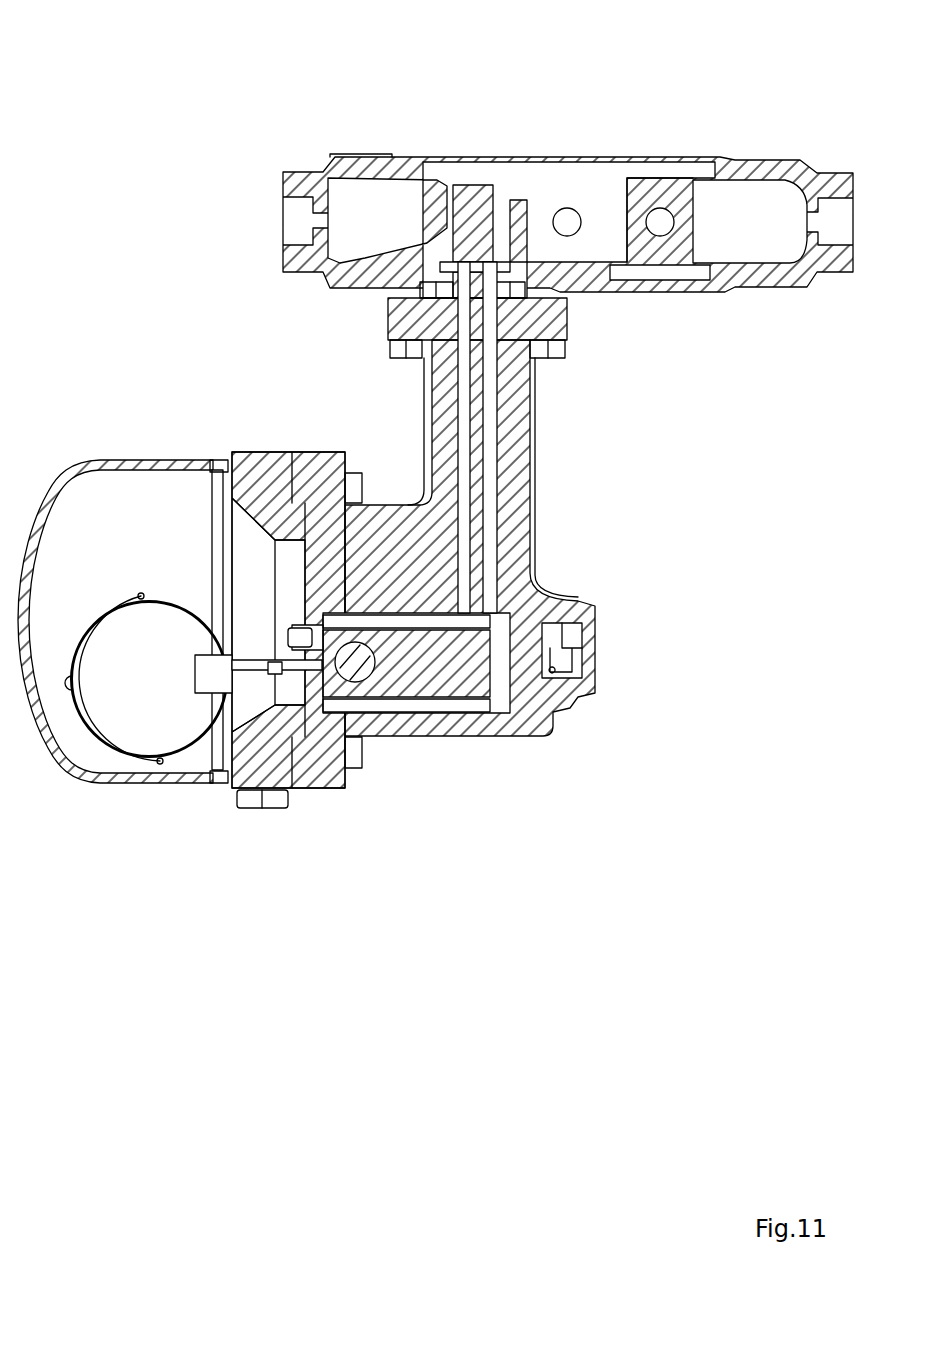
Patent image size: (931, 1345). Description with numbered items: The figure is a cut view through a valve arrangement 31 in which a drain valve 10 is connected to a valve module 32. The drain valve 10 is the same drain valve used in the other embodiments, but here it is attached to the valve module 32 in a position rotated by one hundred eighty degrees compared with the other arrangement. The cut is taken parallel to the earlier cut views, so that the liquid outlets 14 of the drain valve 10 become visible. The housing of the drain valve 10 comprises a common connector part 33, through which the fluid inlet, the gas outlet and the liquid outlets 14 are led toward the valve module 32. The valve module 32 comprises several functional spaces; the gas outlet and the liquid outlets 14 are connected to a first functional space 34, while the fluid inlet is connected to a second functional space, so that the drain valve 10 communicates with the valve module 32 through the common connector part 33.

The drain valve 10 is at (478, 734).
The liquid outlet 14 is at (463, 500).
The valve arrangement 31 is at (631, 391).
The valve module 32 is at (364, 159).
The common connector part 33 is at (440, 418).
The first functional space 34 is at (530, 243).